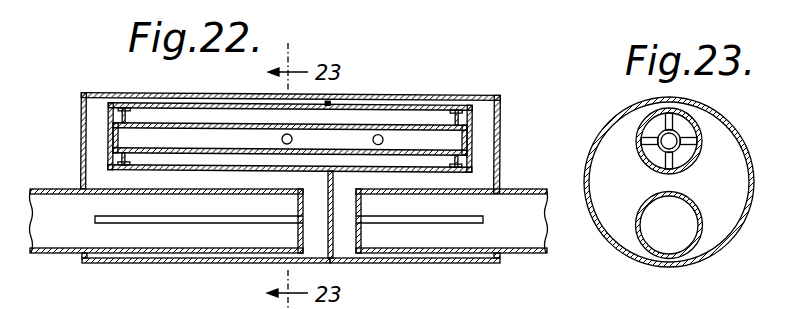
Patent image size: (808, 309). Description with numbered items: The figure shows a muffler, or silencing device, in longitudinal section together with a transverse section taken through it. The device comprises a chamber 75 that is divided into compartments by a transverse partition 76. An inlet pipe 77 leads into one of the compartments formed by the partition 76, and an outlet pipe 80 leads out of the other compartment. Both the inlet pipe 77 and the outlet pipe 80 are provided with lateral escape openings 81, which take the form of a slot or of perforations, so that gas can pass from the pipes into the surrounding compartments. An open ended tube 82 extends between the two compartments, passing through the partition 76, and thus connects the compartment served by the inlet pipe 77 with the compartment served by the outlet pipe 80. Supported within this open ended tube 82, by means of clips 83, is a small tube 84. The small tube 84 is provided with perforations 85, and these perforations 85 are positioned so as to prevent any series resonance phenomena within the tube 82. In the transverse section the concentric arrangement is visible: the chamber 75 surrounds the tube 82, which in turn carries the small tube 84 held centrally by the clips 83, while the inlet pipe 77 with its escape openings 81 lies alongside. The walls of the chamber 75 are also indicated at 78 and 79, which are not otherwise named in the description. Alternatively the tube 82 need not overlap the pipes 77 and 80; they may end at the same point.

In FIG. 22, the chamber 75 is at (384, 98).
In FIG. 23, the chamber 75 is at (616, 253).
In FIG. 22, the transverse partition 76 is at (336, 250).
In FIG. 22, the inlet pipe 77 is at (120, 253).
In FIG. 23, the inlet pipe 77 is at (697, 210).
In FIG. 22, the bottom plate (left portion) 78 is at (233, 258).
In FIG. 22, the bottom plate (right portion) 79 is at (466, 261).
In FIG. 22, the outlet pipe 80 is at (519, 191).
In FIG. 22, the lateral escape openings 81 is at (187, 223).
In FIG. 23, the lateral escape openings 81 is at (700, 226).
In FIG. 22, the open ended tube 82 is at (197, 108).
In FIG. 23, the open ended tube 82 is at (642, 129).
In FIG. 22, the clips 83 is at (141, 109).
In FIG. 23, the clips 83 is at (698, 126).
In FIG. 22, the small tube 84 is at (213, 126).
In FIG. 22, the perforations 85 is at (381, 136).
In FIG. 23, the perforations 85 is at (681, 141).